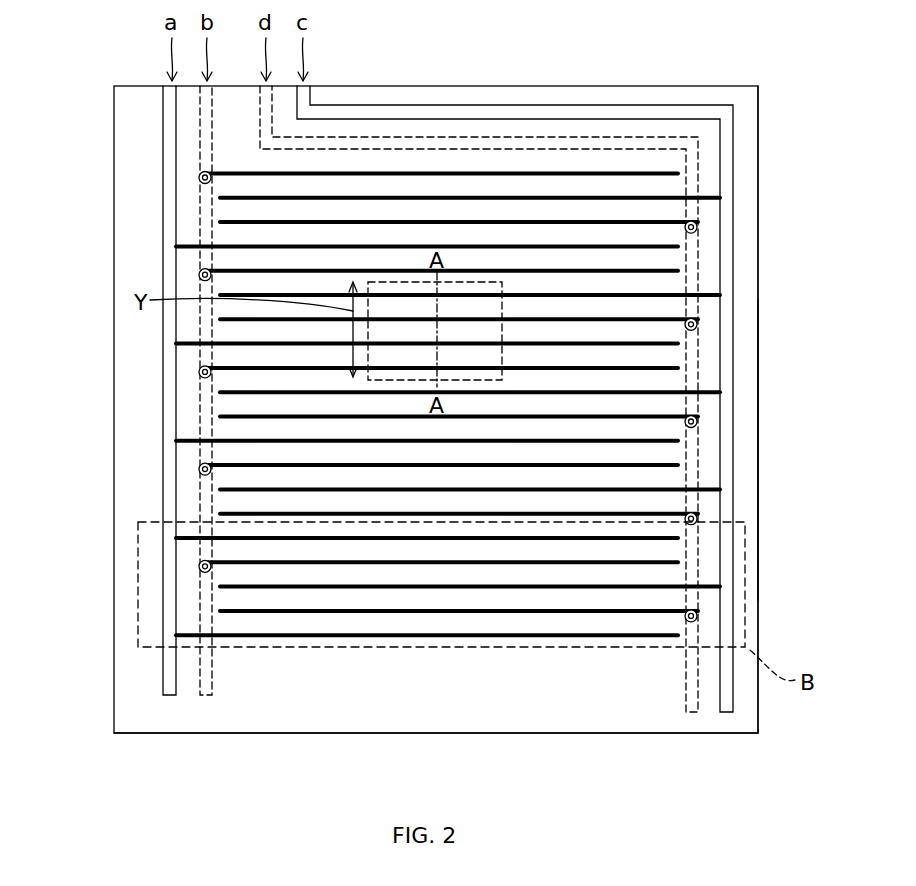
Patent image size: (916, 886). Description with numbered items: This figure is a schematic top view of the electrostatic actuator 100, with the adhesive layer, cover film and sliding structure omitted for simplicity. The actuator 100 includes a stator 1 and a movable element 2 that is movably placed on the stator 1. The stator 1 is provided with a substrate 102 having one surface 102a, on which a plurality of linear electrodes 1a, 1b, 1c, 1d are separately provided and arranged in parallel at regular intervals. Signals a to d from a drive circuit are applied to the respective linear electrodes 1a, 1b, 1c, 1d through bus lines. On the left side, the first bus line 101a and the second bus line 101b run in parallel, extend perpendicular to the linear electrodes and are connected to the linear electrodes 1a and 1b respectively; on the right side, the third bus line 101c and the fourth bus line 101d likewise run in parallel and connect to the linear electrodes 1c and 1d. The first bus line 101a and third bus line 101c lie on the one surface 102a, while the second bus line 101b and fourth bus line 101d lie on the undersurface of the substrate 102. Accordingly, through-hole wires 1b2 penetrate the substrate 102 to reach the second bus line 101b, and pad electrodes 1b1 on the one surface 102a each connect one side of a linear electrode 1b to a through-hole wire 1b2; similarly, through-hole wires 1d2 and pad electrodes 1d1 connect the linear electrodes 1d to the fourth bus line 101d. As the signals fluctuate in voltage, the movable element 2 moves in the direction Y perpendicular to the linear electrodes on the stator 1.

The stator 1 is at (766, 165).
The movable element 2 is at (503, 312).
The electrostatic actuator 100 is at (482, 782).
The linear electrode 1a is at (235, 343).
The linear electrode 1b is at (246, 370).
The linear electrode 1c is at (663, 297).
The linear electrode 1d is at (665, 321).
The pad electrode 1b1 is at (205, 370).
The through-hole wire 1b2 is at (205, 375).
The pad electrode 1d1 is at (694, 331).
The through-hole wire 1d2 is at (697, 325).
The first bus line 101a is at (163, 207).
The second bus line 101b is at (200, 137).
The third bus line 101c is at (735, 233).
The fourth bus line 101d is at (700, 148).
The substrate 102 is at (752, 200).
The one surface 102a is at (745, 432).